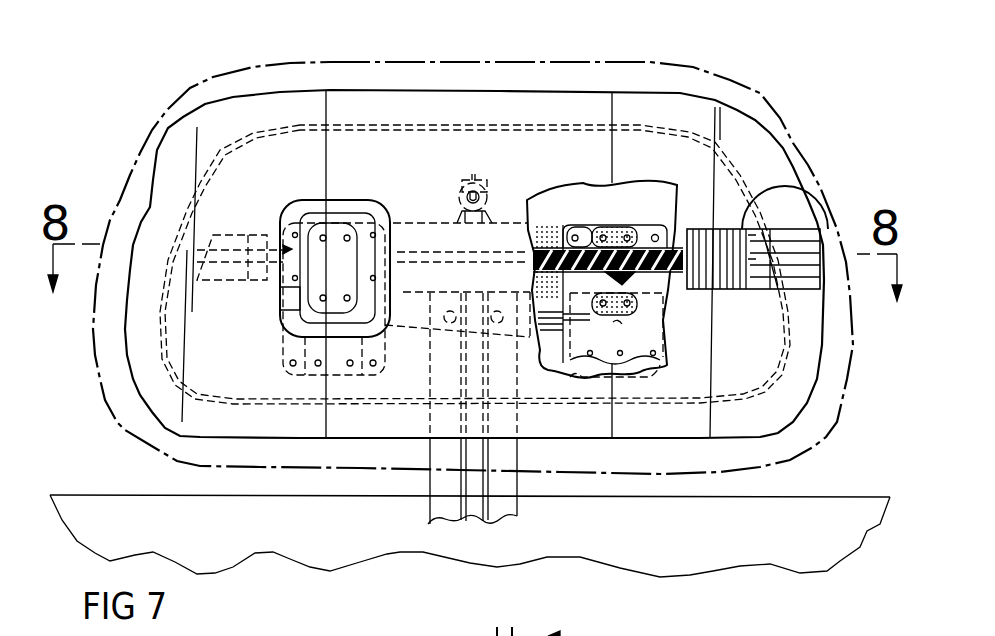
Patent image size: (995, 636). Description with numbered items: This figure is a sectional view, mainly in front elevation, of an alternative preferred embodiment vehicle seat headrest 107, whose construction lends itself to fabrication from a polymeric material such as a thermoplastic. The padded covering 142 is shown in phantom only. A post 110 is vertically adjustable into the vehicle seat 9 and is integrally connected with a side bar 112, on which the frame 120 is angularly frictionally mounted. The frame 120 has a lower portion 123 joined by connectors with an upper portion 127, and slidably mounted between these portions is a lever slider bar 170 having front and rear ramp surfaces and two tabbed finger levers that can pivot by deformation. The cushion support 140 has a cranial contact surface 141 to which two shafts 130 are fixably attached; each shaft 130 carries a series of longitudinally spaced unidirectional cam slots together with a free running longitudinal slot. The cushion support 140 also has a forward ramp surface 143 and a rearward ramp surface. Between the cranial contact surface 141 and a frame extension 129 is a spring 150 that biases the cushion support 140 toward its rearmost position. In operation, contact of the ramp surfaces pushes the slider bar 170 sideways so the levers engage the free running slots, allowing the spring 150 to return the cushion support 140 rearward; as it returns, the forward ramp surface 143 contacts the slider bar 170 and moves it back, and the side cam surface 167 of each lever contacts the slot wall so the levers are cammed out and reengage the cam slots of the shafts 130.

The vehicle seat 9 is at (823, 497).
The headrest 107 is at (764, 82).
The post 110 is at (434, 503).
The side bar 112 is at (550, 330).
The frame 120 is at (582, 222).
The lower portion 123 is at (667, 283).
The upper portion 127 is at (637, 233).
The frame extension 129 is at (463, 175).
The shafts 130 is at (625, 310).
The cushion support 140 is at (632, 78).
The cranial contact surface 141 is at (398, 90).
The padded covering 142 is at (305, 62).
The forward ramp surface 143 is at (818, 190).
The spring 150 is at (493, 183).
The side cam surface 167 is at (300, 276).
The lever slider bar 170 is at (679, 280).